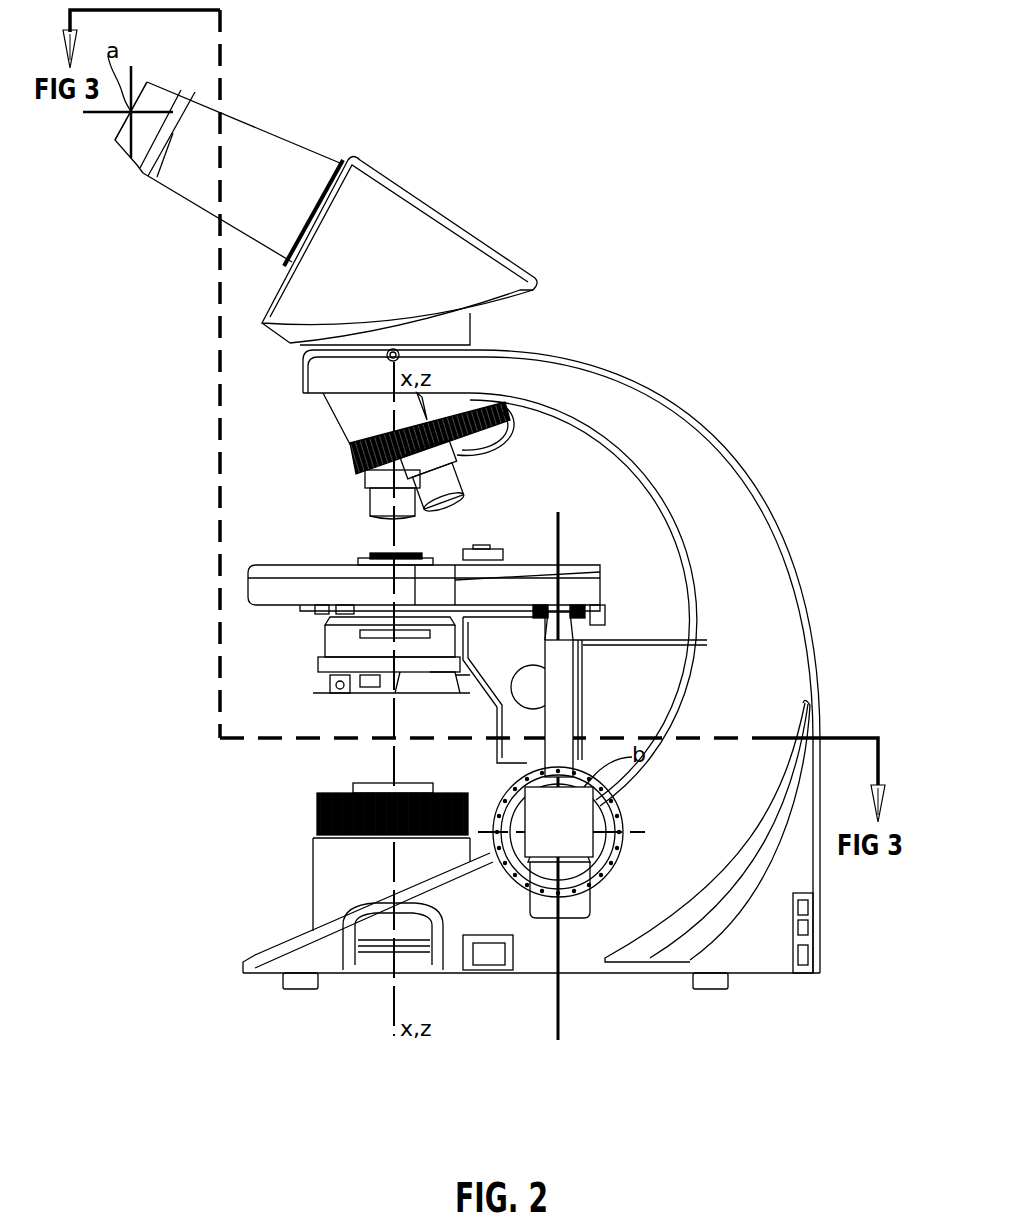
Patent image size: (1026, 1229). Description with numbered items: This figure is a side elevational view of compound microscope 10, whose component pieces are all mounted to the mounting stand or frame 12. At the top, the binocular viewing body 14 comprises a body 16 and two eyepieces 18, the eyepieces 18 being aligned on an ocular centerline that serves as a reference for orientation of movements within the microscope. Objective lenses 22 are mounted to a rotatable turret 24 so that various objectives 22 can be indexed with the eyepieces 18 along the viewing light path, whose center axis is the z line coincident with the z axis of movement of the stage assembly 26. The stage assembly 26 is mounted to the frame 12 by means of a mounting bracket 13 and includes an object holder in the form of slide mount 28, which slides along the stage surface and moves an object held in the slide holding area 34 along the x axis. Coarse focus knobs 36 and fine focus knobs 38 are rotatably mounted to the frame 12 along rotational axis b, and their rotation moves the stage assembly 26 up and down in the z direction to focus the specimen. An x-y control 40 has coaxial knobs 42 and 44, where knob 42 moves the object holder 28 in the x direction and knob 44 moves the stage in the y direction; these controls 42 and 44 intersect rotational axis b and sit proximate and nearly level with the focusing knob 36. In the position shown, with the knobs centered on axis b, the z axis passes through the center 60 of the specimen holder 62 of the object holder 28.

The compound microscope 10 is at (666, 245).
The mounting stand or frame 12 is at (693, 375).
The mounting bracket 13 is at (593, 623).
The viewing body 14 is at (320, 103).
The body 16 is at (507, 178).
The eyepieces 18 is at (122, 139).
The objective lenses 22 is at (370, 495).
The rotatable turret 24 is at (325, 440).
The stage assembly 26 is at (242, 543).
The slide mount 28 is at (530, 555).
The slide holding area 34 is at (390, 557).
The coarse focus knobs 36 is at (607, 805).
The fine focus knobs 38 is at (597, 822).
The x-y control 40 is at (568, 682).
The knob 42 is at (570, 908).
The knob 44 is at (583, 843).
The center 60 is at (376, 554).
The specimen holder 62 is at (420, 547).